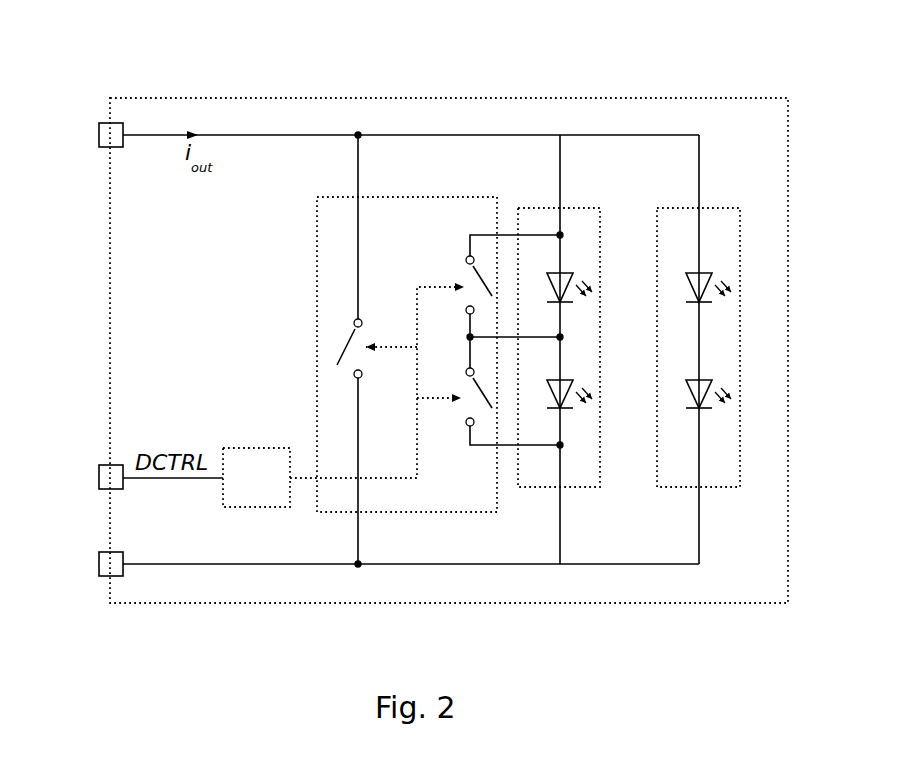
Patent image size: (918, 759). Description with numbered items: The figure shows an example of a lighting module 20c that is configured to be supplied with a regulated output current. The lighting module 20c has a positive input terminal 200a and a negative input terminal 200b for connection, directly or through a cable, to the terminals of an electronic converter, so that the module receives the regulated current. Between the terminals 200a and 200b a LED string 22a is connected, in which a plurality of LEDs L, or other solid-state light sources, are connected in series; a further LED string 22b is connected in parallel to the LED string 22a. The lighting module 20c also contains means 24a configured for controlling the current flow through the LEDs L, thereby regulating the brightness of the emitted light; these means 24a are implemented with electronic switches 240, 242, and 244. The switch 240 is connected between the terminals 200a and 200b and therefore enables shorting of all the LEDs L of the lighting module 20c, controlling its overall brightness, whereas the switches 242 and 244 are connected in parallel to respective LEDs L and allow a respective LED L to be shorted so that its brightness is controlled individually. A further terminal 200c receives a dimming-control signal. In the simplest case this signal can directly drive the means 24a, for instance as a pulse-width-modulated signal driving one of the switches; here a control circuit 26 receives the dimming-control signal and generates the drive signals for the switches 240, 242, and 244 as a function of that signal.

The lighting module 20c is at (544, 97).
The positive input terminal 200a is at (103, 121).
The negative input terminal 200b is at (104, 578).
The further terminal 200c is at (100, 463).
The means for controlling the current flow through the LEDs 24a is at (322, 195).
The electronic switch 240 is at (336, 336).
The electronic switch 242 is at (459, 271).
The electronic switch 244 is at (456, 412).
The control circuit 26 is at (272, 446).
The LED string 22a is at (571, 490).
The further LED string 22b is at (711, 490).
The LED L is at (569, 262).